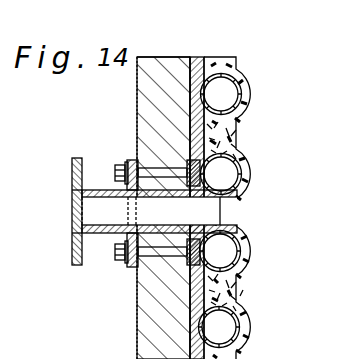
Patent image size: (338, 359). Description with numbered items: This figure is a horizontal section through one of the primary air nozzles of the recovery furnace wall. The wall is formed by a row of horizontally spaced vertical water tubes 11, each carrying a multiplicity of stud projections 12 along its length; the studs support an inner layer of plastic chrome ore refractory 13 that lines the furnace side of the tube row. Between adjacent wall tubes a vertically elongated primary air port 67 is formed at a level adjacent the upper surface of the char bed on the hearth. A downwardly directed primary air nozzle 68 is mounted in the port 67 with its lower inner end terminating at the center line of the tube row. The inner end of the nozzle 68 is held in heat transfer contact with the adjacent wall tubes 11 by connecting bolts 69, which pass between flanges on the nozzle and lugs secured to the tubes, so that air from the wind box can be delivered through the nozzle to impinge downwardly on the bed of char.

The water tubes 11 is at (232, 327).
The stud projections 12 is at (238, 303).
The plastic chrome ore refractory 13 is at (250, 263).
The primary air port 67 is at (228, 211).
The primary air nozzle 68 is at (100, 236).
The connecting bolts 69 is at (160, 167).